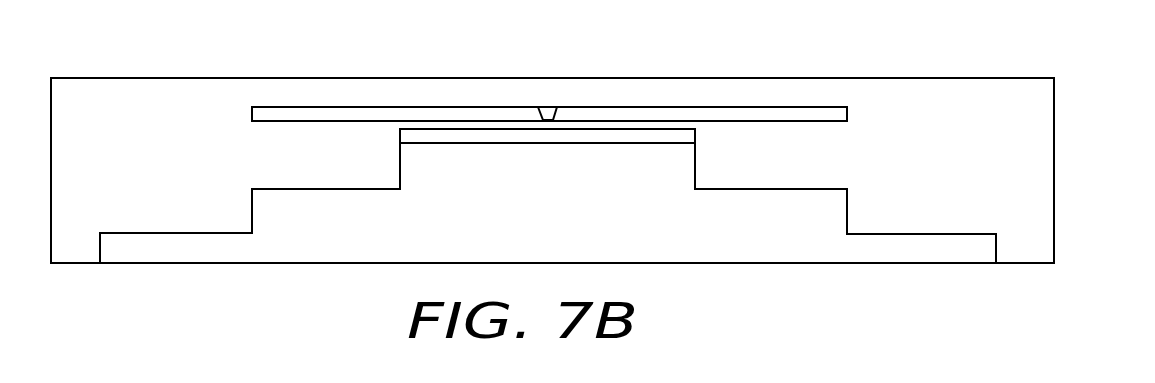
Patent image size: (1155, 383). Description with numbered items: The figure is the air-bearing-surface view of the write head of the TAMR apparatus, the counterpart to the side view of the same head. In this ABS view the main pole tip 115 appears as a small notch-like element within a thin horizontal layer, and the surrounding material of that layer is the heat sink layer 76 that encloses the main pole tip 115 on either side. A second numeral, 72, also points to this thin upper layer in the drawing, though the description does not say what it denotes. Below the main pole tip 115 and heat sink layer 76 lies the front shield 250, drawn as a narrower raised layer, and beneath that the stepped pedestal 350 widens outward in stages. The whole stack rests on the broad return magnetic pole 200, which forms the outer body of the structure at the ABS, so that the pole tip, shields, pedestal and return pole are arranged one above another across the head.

The return magnetic pole 200 is at (979, 251).
The pedestal 350 is at (824, 208).
The front shield 250 is at (613, 158).
The upper plate 72 is at (657, 113).
The heat sink layer 76 is at (812, 113).
The main pole tip 115 is at (541, 115).